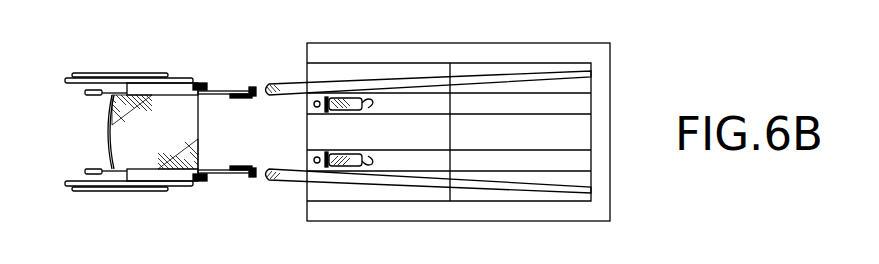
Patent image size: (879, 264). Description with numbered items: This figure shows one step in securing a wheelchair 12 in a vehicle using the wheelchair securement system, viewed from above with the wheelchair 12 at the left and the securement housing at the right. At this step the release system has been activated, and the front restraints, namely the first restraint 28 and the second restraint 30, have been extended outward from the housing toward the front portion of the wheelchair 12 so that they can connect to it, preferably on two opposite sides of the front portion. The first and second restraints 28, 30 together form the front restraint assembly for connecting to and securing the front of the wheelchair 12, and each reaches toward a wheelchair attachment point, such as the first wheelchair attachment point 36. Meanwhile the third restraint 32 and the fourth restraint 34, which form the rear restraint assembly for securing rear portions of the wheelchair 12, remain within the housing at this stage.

The wheelchair 12 is at (108, 130).
The first restraint 28 is at (567, 72).
The second restraint 30 is at (567, 191).
The third restraint 32 is at (347, 99).
The fourth restraint 34 is at (344, 168).
The first wheelchair attachment point 36 is at (253, 87).